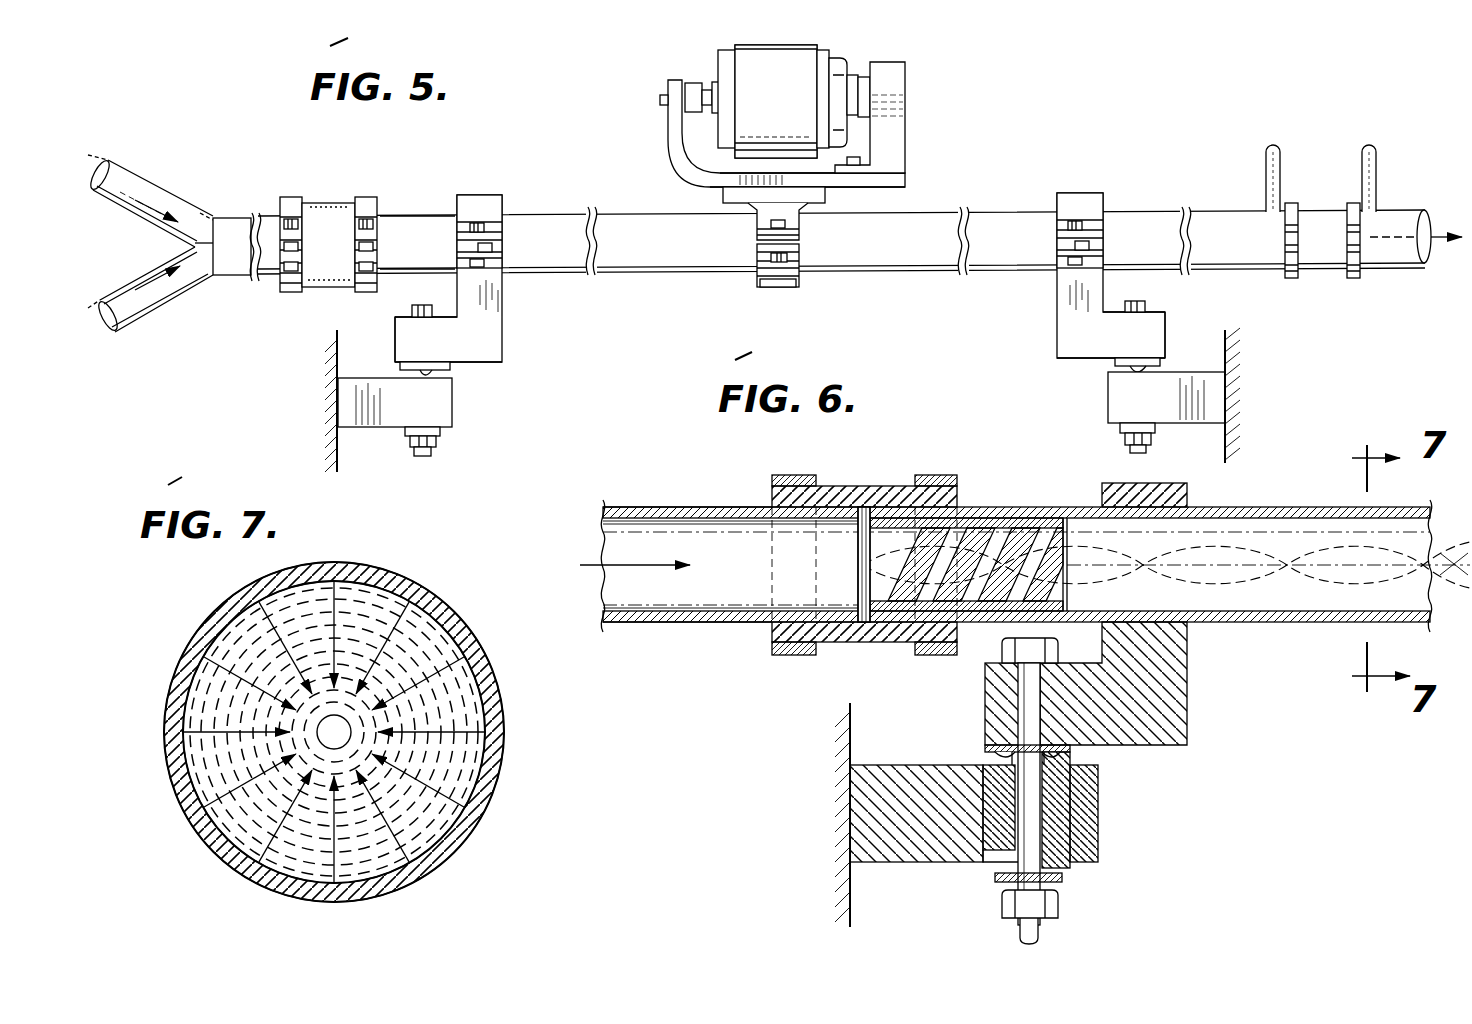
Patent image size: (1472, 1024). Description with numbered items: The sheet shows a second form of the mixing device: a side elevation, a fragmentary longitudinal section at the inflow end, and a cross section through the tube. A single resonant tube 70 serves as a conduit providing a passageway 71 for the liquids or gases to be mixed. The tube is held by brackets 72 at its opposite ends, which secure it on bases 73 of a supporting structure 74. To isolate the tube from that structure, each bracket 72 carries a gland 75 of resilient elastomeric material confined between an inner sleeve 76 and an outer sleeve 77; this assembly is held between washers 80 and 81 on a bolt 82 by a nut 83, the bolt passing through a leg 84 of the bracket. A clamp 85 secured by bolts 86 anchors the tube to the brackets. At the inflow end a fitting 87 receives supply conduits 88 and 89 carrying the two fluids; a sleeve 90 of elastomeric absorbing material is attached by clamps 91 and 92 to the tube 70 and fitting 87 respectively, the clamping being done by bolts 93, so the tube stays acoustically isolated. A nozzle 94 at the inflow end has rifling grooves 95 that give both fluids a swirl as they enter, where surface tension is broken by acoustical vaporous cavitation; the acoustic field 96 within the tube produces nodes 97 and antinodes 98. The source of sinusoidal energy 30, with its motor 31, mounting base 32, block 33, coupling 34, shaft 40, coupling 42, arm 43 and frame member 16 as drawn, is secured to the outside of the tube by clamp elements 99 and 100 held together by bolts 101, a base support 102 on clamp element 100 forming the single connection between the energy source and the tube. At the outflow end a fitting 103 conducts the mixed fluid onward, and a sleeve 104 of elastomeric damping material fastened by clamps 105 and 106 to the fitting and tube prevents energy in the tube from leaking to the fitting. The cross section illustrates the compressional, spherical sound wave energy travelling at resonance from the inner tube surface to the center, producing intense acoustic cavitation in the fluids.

In FIG. 6, the frame member 16 is at (1096, 777).
In FIG. 5, the source of sinusoidal energy 30 is at (822, 46).
In FIG. 5, the motor 31 is at (782, 101).
In FIG. 5, the motor mounting base 32 is at (705, 178).
In FIG. 5, the bearing block 33 is at (895, 141).
In FIG. 5, the coupling 34 is at (868, 99).
In FIG. 5, the drive shaft 40 is at (690, 82).
In FIG. 5, the shaft coupling 42 is at (712, 90).
In FIG. 5, the bracket arm 43 is at (668, 126).
In FIG. 5, the resonant tube 70 is at (550, 226).
In FIG. 6, the resonant tube 70 is at (1290, 509).
In FIG. 7, the resonant tube 70 is at (226, 612).
In FIG. 6, the passageway 71 is at (722, 610).
In FIG. 7, the passageway 71 is at (400, 597).
In FIG. 5, the bracket 72 is at (495, 322).
In FIG. 6, the bracket 72 is at (1165, 682).
In FIG. 5, the base 73 is at (448, 410).
In FIG. 6, the base 73 is at (880, 852).
In FIG. 5, the supporting structure 74 is at (330, 420).
In FIG. 6, the supporting structure 74 is at (852, 732).
In FIG. 5, the gland 75 is at (448, 369).
In FIG. 6, the gland 75 is at (1062, 812).
In FIG. 6, the inner sleeve 76 is at (998, 762).
In FIG. 6, the outer sleeve 77 is at (985, 796).
In FIG. 6, the washer 80 is at (1066, 878).
In FIG. 6, the washer 81 is at (1065, 748).
In FIG. 5, the bolt 82 is at (410, 311).
In FIG. 6, the bolt 82 is at (1028, 822).
In FIG. 5, the nut 83 is at (437, 446).
In FIG. 6, the nut 83 is at (1005, 904).
In FIG. 5, the leg 84 is at (402, 340).
In FIG. 6, the leg 84 is at (992, 698).
In FIG. 5, the clamp 85 is at (480, 206).
In FIG. 6, the clamp 85 is at (1138, 493).
In FIG. 5, the bolt 86 is at (1072, 222).
In FIG. 5, the fitting 87 is at (232, 228).
In FIG. 6, the fitting 87 is at (668, 512).
In FIG. 5, the supply conduit 88 is at (133, 178).
In FIG. 5, the supply conduit 89 is at (145, 312).
In FIG. 5, the sleeve 90 is at (332, 276).
In FIG. 6, the sleeve 90 is at (845, 500).
In FIG. 5, the clamp 91 is at (368, 200).
In FIG. 6, the clamp 91 is at (945, 481).
In FIG. 5, the clamp 92 is at (292, 205).
In FIG. 6, the clamp 92 is at (782, 476).
In FIG. 5, the bolt 93 is at (283, 222).
In FIG. 6, the nozzle 94 is at (995, 520).
In FIG. 6, the rifling groove 95 is at (900, 626).
In FIG. 6, the helical insert 96 is at (1220, 596).
In FIG. 7, the helical insert 96 is at (442, 706).
In FIG. 6, the node 97 is at (1143, 562).
In FIG. 6, the antinode 98 is at (1218, 545).
In FIG. 5, the clamp element 99 is at (775, 280).
In FIG. 5, the clamp element 100 is at (765, 218).
In FIG. 5, the bolt 101 is at (803, 258).
In FIG. 5, the base support 102 is at (820, 194).
In FIG. 5, the fitting 103 is at (1386, 222).
In FIG. 5, the sleeve 104 is at (1332, 216).
In FIG. 5, the clamp 105 is at (1355, 280).
In FIG. 5, the clamp 106 is at (1290, 280).